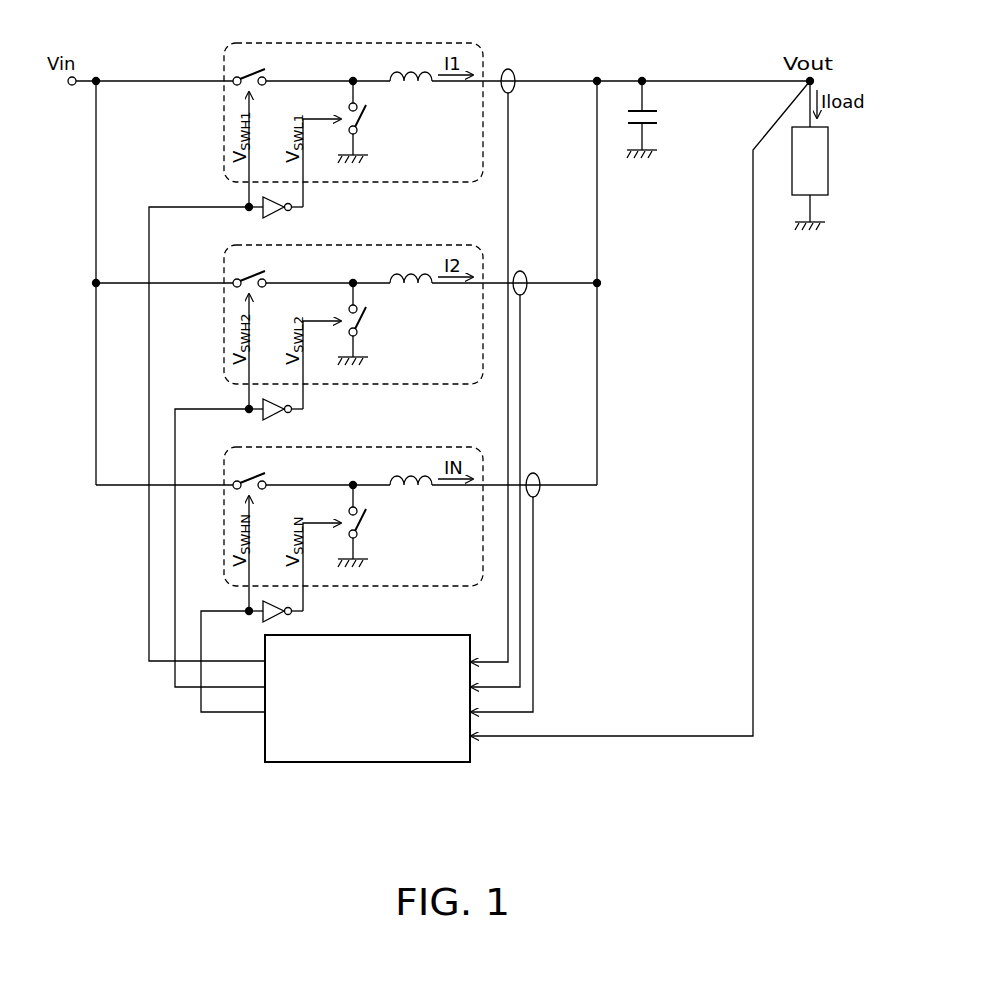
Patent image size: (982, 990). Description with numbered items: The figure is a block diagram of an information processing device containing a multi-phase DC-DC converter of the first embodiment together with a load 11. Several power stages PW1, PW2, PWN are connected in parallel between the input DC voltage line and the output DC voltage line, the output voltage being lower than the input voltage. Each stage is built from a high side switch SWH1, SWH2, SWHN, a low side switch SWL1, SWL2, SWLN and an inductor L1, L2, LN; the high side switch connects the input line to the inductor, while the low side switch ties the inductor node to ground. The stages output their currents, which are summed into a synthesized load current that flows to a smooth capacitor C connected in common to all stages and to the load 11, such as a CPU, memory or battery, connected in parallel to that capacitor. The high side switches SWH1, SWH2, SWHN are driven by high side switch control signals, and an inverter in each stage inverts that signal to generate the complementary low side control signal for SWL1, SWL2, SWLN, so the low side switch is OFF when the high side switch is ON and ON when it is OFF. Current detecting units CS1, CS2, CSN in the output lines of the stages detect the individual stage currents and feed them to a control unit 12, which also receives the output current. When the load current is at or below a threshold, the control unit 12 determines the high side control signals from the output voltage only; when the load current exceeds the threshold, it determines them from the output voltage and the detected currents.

The load 11 is at (828, 160).
The control unit 12 is at (367, 762).
The power stage PW1 is at (353, 101).
The power stage PW2 is at (353, 303).
The power stage PWN is at (353, 505).
The high side switch SWH1 is at (259, 67).
The high side switch SWH2 is at (259, 269).
The high side switch SWHN is at (260, 471).
The low side switch SWL1 is at (383, 122).
The low side switch SWL2 is at (383, 324).
The low side switch SWLN is at (384, 526).
The inductor L1 is at (411, 94).
The inductor L2 is at (411, 296).
The inductor LN is at (411, 498).
The current detecting unit CS1 is at (503, 66).
The current detecting unit CS2 is at (529, 268).
The current detecting unit CSN is at (541, 470).
The smooth capacitor C is at (634, 118).